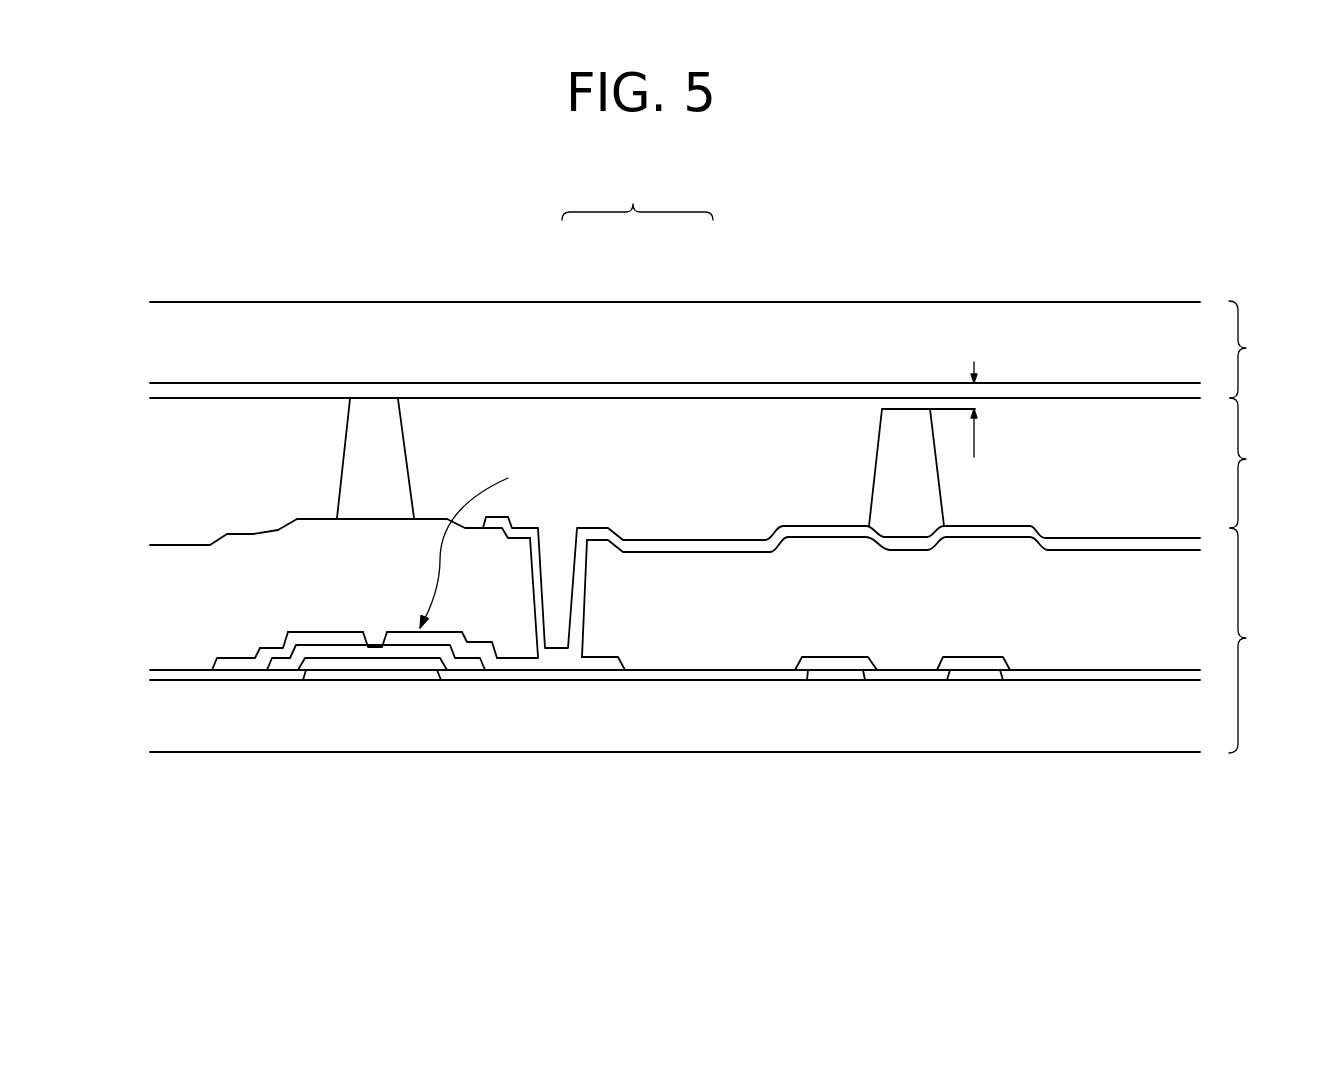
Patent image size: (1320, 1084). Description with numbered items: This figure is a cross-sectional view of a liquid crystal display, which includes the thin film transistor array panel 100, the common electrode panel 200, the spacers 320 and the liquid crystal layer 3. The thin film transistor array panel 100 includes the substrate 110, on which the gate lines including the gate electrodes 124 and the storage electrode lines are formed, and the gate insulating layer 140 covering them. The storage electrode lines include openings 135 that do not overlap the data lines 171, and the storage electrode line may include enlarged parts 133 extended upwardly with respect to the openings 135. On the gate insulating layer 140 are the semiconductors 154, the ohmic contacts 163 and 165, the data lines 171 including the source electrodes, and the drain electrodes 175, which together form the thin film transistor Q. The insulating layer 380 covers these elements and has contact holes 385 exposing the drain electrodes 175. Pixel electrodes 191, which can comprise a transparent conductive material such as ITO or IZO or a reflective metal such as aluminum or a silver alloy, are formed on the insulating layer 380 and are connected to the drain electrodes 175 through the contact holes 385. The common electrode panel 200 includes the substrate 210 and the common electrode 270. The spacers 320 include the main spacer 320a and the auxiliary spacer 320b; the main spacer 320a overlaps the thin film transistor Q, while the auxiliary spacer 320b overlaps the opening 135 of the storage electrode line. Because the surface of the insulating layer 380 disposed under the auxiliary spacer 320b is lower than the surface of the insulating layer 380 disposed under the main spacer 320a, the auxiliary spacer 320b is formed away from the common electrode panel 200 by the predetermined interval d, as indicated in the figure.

The substrate 110 is at (168, 740).
The gate electrode 124 is at (403, 676).
The enlarged part 133 is at (838, 673).
The opening 135 is at (865, 672).
The gate insulating layer 140 is at (680, 673).
The semiconductor 154 is at (302, 660).
The ohmic contact 163 is at (290, 658).
The ohmic contact 165 is at (470, 657).
The data line 171 is at (238, 652).
The drain electrode 175 is at (540, 658).
The insulating layer 380 is at (752, 620).
The contact hole 385 is at (582, 602).
The pixel electrode 191 is at (1002, 533).
The substrate 210 is at (438, 313).
The common electrode 270 is at (322, 390).
The spacer 320 is at (637, 196).
The main spacer 320a is at (408, 462).
The auxiliary spacer 320b is at (873, 460).
The common electrode panel 200 is at (1257, 349).
The thin film transistor array panel 100 is at (1257, 640).
The liquid crystal layer 3 is at (1246, 463).
The thin film transistor Q is at (476, 541).
The predetermined interval d is at (985, 409).